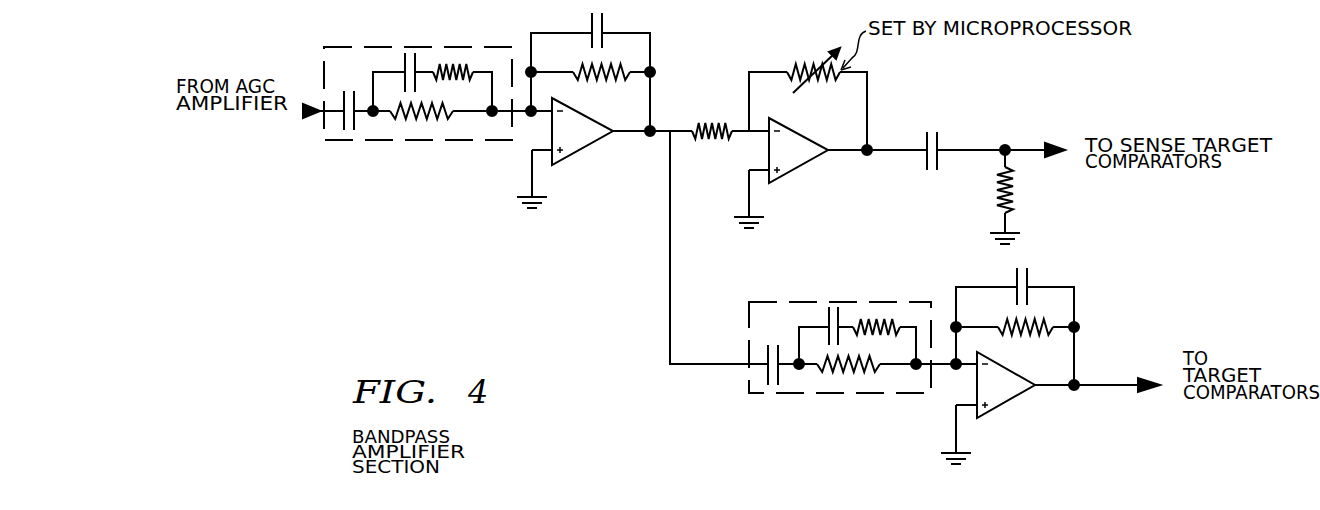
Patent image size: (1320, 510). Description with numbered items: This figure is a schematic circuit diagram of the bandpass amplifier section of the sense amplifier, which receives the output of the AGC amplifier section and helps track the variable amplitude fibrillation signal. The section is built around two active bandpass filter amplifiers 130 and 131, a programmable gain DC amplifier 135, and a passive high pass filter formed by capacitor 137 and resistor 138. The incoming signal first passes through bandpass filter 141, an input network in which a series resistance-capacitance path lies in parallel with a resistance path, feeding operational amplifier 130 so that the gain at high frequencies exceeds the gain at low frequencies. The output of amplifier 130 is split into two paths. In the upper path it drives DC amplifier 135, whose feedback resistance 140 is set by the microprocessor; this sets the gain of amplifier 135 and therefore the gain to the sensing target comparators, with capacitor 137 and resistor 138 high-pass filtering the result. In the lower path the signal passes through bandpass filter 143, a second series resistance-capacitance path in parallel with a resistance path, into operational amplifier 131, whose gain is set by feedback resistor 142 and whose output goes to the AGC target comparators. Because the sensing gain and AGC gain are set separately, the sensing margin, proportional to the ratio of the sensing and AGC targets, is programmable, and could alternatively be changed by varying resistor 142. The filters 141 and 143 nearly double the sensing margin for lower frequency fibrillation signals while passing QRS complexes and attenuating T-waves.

The active bandpass filter amplifier 130 is at (570, 143).
The active bandpass filter amplifier 131 is at (1002, 390).
The programmable gain DC amplifier 135 is at (797, 162).
The capacitor 137 is at (938, 143).
The resistor 138 is at (1014, 205).
The resistance 140 is at (803, 63).
The bandpass filter 141 is at (417, 48).
The resistor 142 is at (1053, 323).
The bandpass filter 143 is at (765, 393).